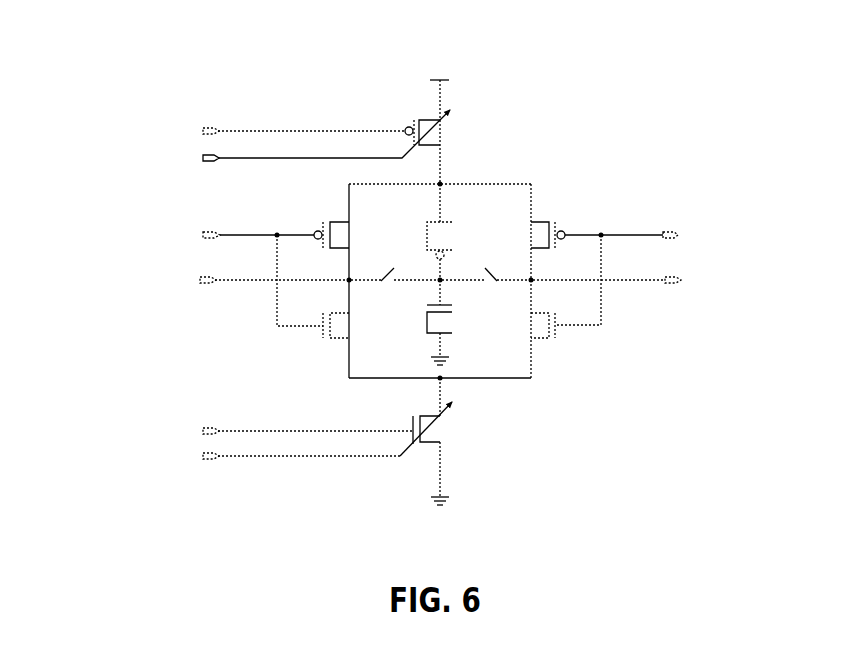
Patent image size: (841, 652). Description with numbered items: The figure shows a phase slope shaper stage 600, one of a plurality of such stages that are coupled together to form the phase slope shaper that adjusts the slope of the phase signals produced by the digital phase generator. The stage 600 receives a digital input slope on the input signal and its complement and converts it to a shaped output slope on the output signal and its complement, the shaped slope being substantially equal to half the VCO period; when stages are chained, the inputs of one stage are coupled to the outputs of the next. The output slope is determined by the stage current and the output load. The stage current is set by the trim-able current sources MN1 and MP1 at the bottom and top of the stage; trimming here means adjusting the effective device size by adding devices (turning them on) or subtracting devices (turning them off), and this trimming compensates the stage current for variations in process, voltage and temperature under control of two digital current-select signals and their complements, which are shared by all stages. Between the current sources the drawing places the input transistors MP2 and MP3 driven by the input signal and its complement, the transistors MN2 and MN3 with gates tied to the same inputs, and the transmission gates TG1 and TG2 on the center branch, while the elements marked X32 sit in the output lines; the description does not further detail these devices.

The phase slope shaper stage 600 is at (708, 120).
The switch X32 is at (389, 268).
The trim-able MP1 current source MP1 is at (276, 132).
The PMOS transistor MP2 is at (274, 233).
The PMOS transistor MP3 is at (615, 235).
The trim-able MN1 current source MN1 is at (285, 441).
The NMOS transistor MN2 is at (329, 288).
The NMOS transistor MN3 is at (550, 288).
The transmission gate TG1 is at (424, 232).
The transmission gate TG2 is at (454, 322).